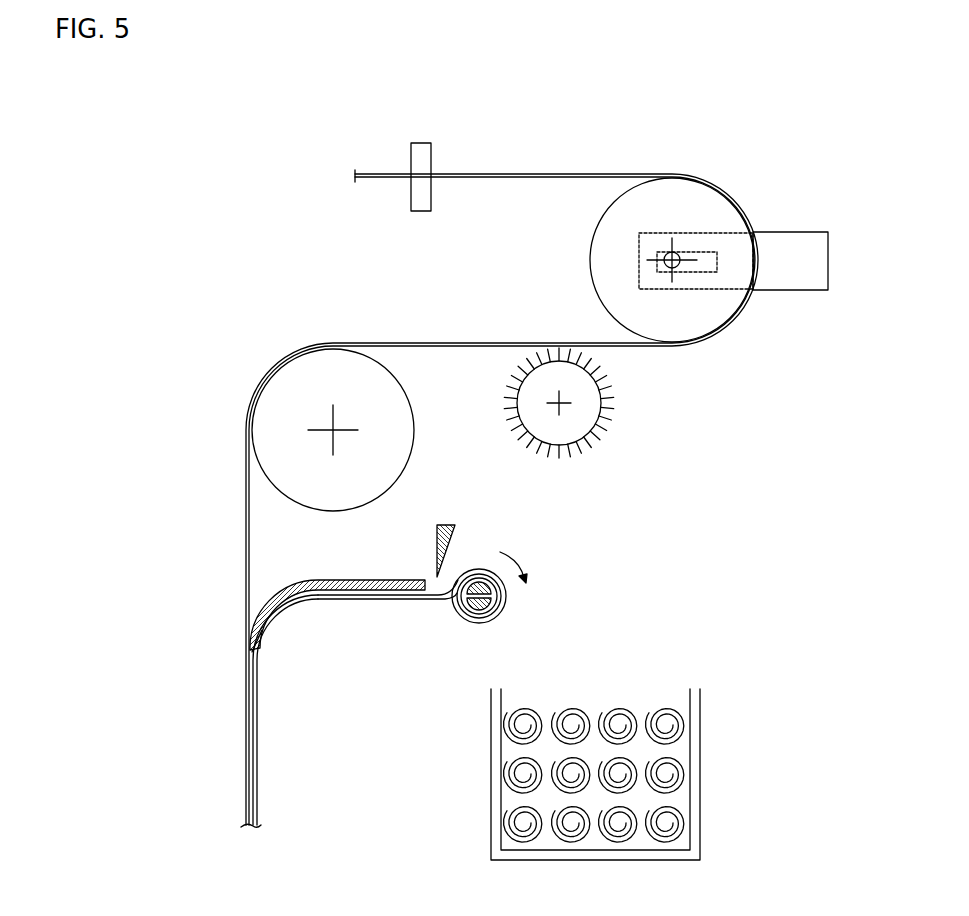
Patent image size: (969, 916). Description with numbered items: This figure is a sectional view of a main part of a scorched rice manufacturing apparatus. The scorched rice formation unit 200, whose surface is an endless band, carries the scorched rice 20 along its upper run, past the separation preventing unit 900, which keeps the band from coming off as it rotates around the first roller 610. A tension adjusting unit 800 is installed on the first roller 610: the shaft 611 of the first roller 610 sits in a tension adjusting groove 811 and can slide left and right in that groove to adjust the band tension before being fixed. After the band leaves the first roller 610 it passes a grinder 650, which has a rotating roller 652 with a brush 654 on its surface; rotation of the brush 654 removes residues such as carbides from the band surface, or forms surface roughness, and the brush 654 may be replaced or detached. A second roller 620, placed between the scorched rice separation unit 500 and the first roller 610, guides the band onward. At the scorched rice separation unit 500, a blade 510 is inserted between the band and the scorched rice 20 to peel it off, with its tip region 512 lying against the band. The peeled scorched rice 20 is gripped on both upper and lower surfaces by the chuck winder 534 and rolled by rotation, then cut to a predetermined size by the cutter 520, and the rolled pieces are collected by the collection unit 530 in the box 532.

The scorched rice 20 is at (376, 599).
The scorched rice formation unit 200 is at (588, 172).
The scorched rice separation unit 500 is at (499, 575).
The blade 510 is at (357, 580).
The guide end portion 512 is at (254, 629).
The cutter 520 is at (443, 525).
The collection unit 530 is at (567, 736).
The box 532 is at (491, 755).
The chuck winder 534 is at (479, 584).
The first roller 610 is at (590, 262).
The shaft 611 is at (682, 264).
The second roller 620 is at (322, 362).
The grinder 650 is at (620, 425).
The rotating roller 652 is at (568, 428).
The brush 654 is at (600, 436).
The tension adjusting unit 800 is at (813, 224).
The tension adjusting groove 811 is at (718, 263).
The separation preventing unit 900 is at (432, 138).